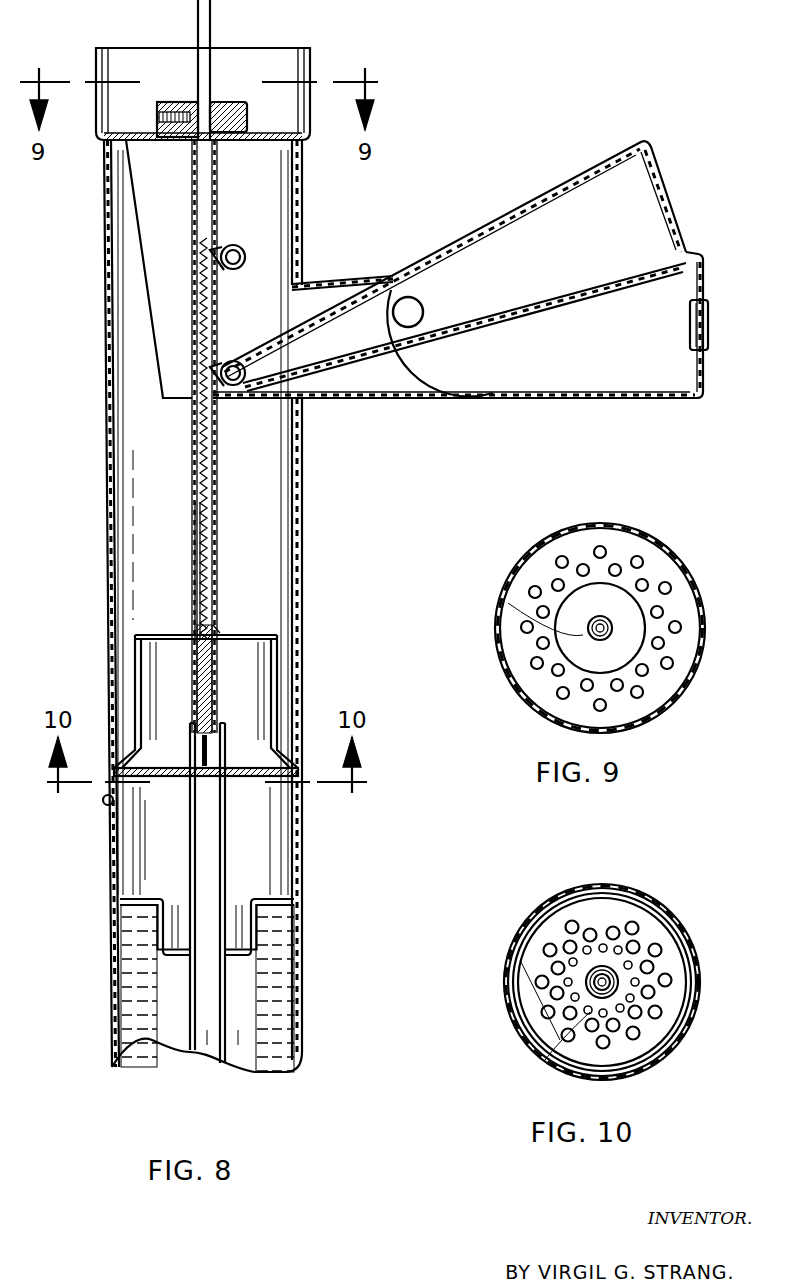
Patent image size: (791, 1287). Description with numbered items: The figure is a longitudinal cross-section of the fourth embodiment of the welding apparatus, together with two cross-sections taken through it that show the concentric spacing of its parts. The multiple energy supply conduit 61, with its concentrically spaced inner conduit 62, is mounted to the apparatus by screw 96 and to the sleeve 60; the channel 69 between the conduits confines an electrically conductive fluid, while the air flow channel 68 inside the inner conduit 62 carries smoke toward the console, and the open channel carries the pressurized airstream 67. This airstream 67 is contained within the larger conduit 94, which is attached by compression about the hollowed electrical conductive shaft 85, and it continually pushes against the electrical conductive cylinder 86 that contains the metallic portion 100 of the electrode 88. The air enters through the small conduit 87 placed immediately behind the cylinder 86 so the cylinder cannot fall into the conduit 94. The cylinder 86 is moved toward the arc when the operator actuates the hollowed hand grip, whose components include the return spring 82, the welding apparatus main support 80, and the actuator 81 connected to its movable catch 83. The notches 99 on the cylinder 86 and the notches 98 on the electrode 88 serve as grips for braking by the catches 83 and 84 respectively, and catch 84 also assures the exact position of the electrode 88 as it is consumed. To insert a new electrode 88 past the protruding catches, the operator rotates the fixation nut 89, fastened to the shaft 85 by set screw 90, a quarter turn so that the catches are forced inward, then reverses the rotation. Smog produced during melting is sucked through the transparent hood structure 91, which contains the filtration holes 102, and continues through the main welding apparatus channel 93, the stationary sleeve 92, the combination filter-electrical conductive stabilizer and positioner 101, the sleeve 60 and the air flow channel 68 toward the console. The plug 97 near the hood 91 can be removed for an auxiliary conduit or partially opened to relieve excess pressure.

In FIG. 8, the sleeve 60 is at (233, 859).
In FIG. 10, the sleeve 60 is at (685, 1013).
In FIG. 8, the multiple energy supply conduit 61 is at (113, 977).
In FIG. 8, the inner conduit 62 is at (162, 1033).
In FIG. 8, the pressurized airstream 67 is at (207, 1042).
In FIG. 8, the air flow channel 68 is at (238, 1042).
In FIG. 8, the channel 69 is at (284, 937).
In FIG. 8, the welding apparatus main support 80 is at (544, 360).
In FIG. 8, the actuator 81 is at (515, 265).
In FIG. 8, the return spring 82 is at (440, 383).
In FIG. 8, the movable catch 83 is at (220, 388).
In FIG. 8, the catch 84 is at (231, 245).
In FIG. 8, the hollowed electrical conductive shaft 85 is at (192, 430).
In FIG. 9, the hollowed electrical conductive shaft 85 is at (577, 635).
In FIG. 10, the hollowed electrical conductive shaft 85 is at (590, 1012).
In FIG. 8, the electrical conductive cylinder 86 is at (197, 660).
In FIG. 8, the small conduit 87 is at (207, 763).
In FIG. 10, the small conduit 87 is at (592, 1000).
In FIG. 8, the electrode 88 is at (212, 3).
In FIG. 9, the electrode 88 is at (588, 633).
In FIG. 8, the fixation nut 89 is at (183, 102).
In FIG. 9, the fixation nut 89 is at (655, 625).
In FIG. 8, the set screw 90 is at (158, 118).
In FIG. 8, the transparent hood structure 91 is at (214, 84).
In FIG. 9, the transparent hood structure 91 is at (678, 653).
In FIG. 8, the stationary sleeve 92 is at (224, 709).
In FIG. 10, the stationary sleeve 92 is at (697, 962).
In FIG. 8, the main welding apparatus channel 93 is at (233, 513).
In FIG. 10, the main welding apparatus channel 93 is at (685, 938).
In FIG. 8, the conduit 94 is at (193, 1028).
In FIG. 10, the conduit 94 is at (622, 980).
In FIG. 8, the screw 96 is at (104, 800).
In FIG. 8, the plug 97 is at (710, 323).
In FIG. 8, the notches 98 is at (208, 312).
In FIG. 8, the notches 99 is at (218, 633).
In FIG. 8, the metallic portion of the electrode 100 is at (196, 516).
In FIG. 8, the combination filter-electrical conductive stabilizer and positioner 101 is at (248, 773).
In FIG. 10, the combination filter-electrical conductive stabilizer and positioner 101 is at (558, 923).
In FIG. 9, the filtration holes 102 is at (533, 587).
In FIG. 10, the filtration holes 102 is at (600, 913).